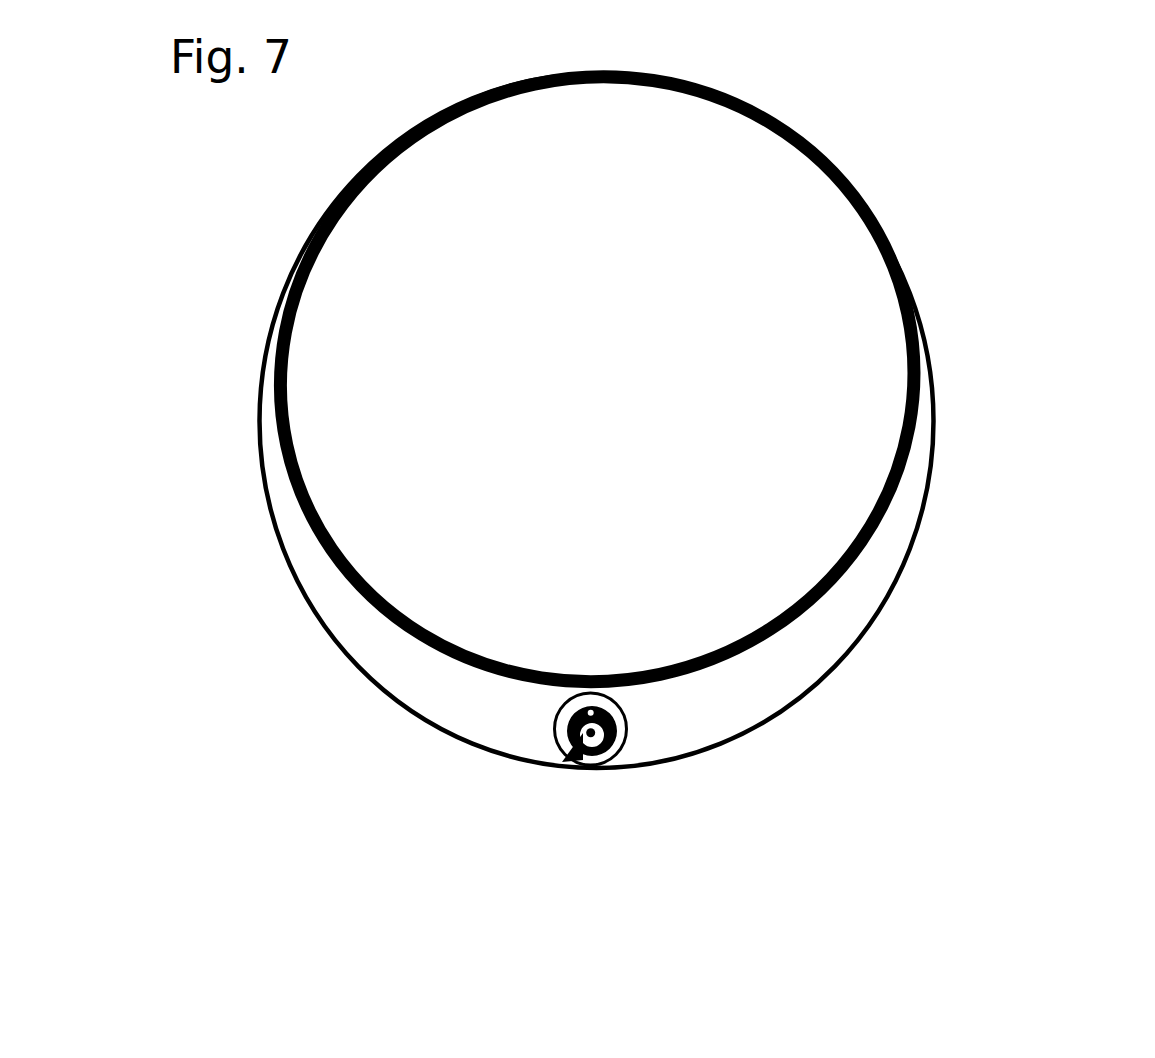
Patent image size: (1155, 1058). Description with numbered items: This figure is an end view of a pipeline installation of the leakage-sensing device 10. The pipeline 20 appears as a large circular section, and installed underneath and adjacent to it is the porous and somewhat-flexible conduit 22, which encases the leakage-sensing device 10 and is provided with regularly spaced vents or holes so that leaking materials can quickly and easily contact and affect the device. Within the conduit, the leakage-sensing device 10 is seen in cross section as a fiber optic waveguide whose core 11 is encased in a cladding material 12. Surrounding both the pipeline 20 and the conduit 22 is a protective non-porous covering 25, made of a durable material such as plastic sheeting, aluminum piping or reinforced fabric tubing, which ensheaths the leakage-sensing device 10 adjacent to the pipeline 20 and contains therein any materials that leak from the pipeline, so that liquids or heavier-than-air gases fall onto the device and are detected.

The leakage-sensing device 10 is at (654, 717).
The core 11 is at (591, 740).
The cladding material 12 is at (570, 762).
The pipeline 20 is at (855, 567).
The porous conduit 22 is at (556, 710).
The protective non-porous covering 25 is at (920, 525).